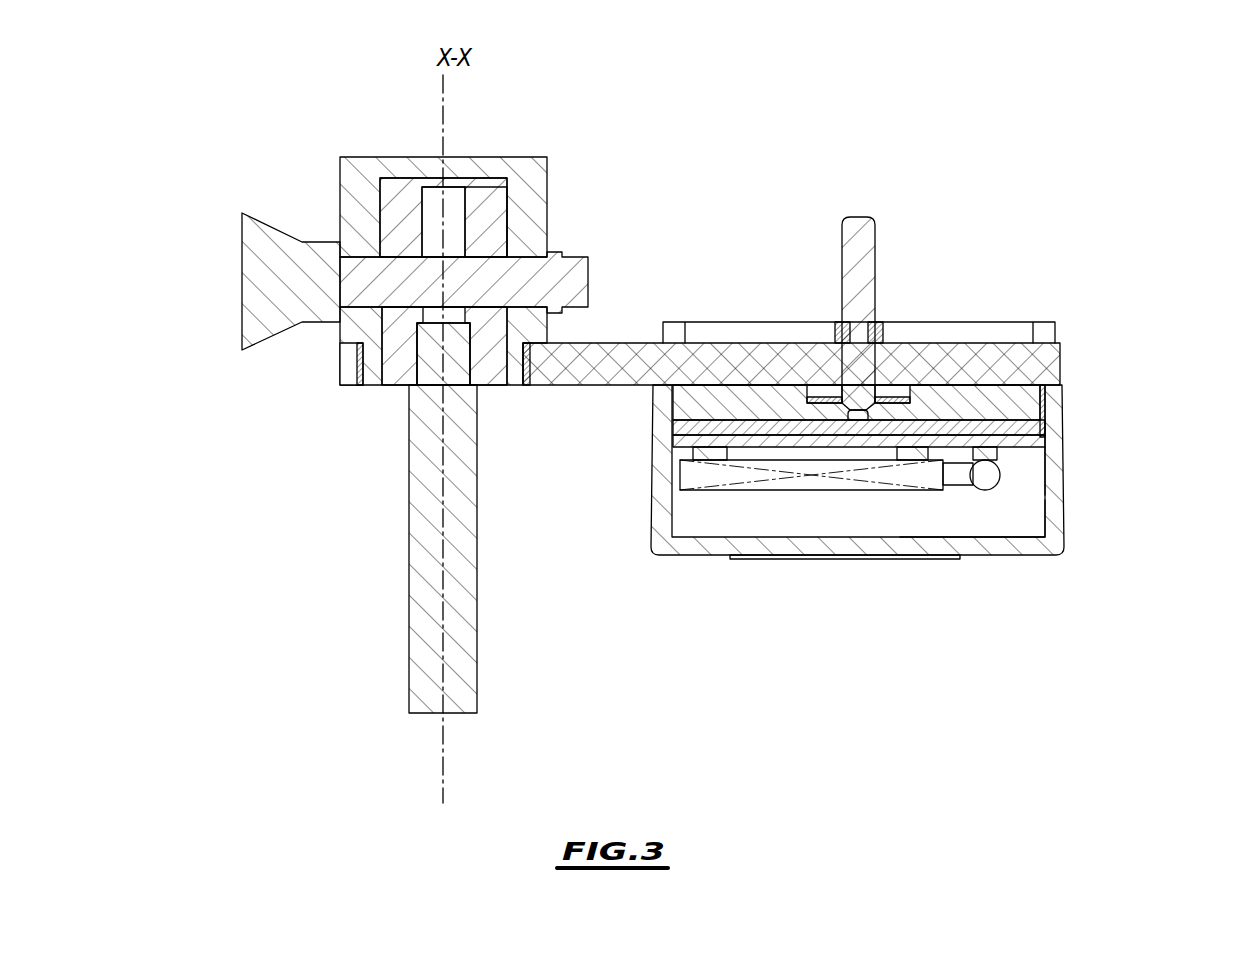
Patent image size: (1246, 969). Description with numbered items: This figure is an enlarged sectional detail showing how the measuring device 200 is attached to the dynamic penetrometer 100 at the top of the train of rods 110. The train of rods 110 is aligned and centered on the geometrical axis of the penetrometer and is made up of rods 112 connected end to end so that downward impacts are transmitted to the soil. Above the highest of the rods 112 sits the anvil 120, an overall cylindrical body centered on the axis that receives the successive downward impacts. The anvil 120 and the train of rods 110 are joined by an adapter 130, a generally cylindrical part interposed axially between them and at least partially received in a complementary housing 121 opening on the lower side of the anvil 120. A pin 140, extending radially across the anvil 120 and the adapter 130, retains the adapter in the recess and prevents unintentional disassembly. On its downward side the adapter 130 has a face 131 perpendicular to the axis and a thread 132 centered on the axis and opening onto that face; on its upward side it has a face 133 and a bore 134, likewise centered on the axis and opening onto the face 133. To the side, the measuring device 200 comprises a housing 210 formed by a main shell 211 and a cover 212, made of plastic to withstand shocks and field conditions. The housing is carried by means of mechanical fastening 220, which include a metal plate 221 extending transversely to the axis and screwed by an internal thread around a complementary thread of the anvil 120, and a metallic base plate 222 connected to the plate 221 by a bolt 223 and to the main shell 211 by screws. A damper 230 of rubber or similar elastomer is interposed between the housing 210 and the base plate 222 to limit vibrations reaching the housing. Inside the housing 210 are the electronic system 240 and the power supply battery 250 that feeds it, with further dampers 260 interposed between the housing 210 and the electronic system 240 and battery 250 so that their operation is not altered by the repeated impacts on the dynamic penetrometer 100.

The dynamic penetrometer 100 is at (388, 714).
The train of rods 110 is at (403, 628).
The rods 112 is at (430, 583).
The anvil 120 is at (333, 178).
The housing of the anvil 121 is at (487, 204).
The adapter 130 is at (376, 341).
The face 131 is at (397, 393).
The thread 132 is at (408, 430).
The face 133 is at (383, 172).
The bore 134 is at (436, 212).
The pin 140 is at (327, 258).
The measuring device 200 is at (638, 563).
The housing 210 is at (1183, 477).
The main shell 211 is at (1053, 463).
The cover 212 is at (1053, 525).
The means of mechanical fastening 220 is at (976, 331).
The plate 221 is at (1065, 356).
The base plate 222 is at (1063, 400).
The bolt 223 is at (858, 243).
The damper 230 is at (1063, 425).
The electronic system 240 is at (810, 492).
The power supply battery 250 is at (996, 505).
The dampers 260 is at (707, 452).